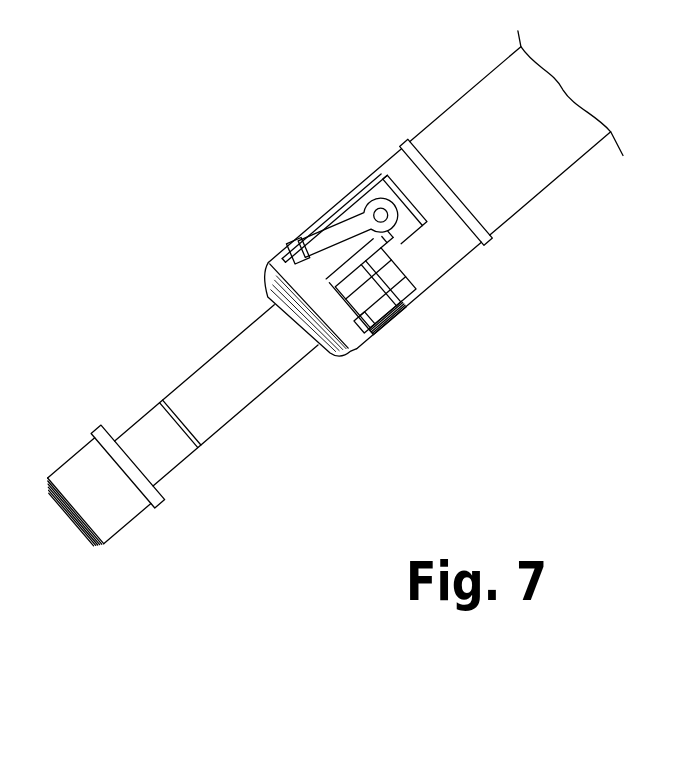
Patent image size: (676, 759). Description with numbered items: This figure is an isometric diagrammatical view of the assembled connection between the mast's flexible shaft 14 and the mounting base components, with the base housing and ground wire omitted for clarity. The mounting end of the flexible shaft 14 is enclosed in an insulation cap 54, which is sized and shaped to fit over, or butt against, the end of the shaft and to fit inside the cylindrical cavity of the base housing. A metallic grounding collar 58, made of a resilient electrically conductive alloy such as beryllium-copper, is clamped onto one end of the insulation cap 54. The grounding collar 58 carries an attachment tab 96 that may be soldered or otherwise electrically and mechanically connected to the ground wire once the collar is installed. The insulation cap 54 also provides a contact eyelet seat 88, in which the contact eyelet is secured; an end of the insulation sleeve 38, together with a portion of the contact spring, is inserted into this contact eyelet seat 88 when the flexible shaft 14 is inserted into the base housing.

The flexible shaft 14 is at (453, 102).
The insulation cap 54 is at (428, 263).
The attachment tab 96 is at (357, 207).
The grounding collar 58 is at (283, 268).
The contact eyelet seat 88 is at (313, 356).
The insulation sleeve 38 is at (227, 360).